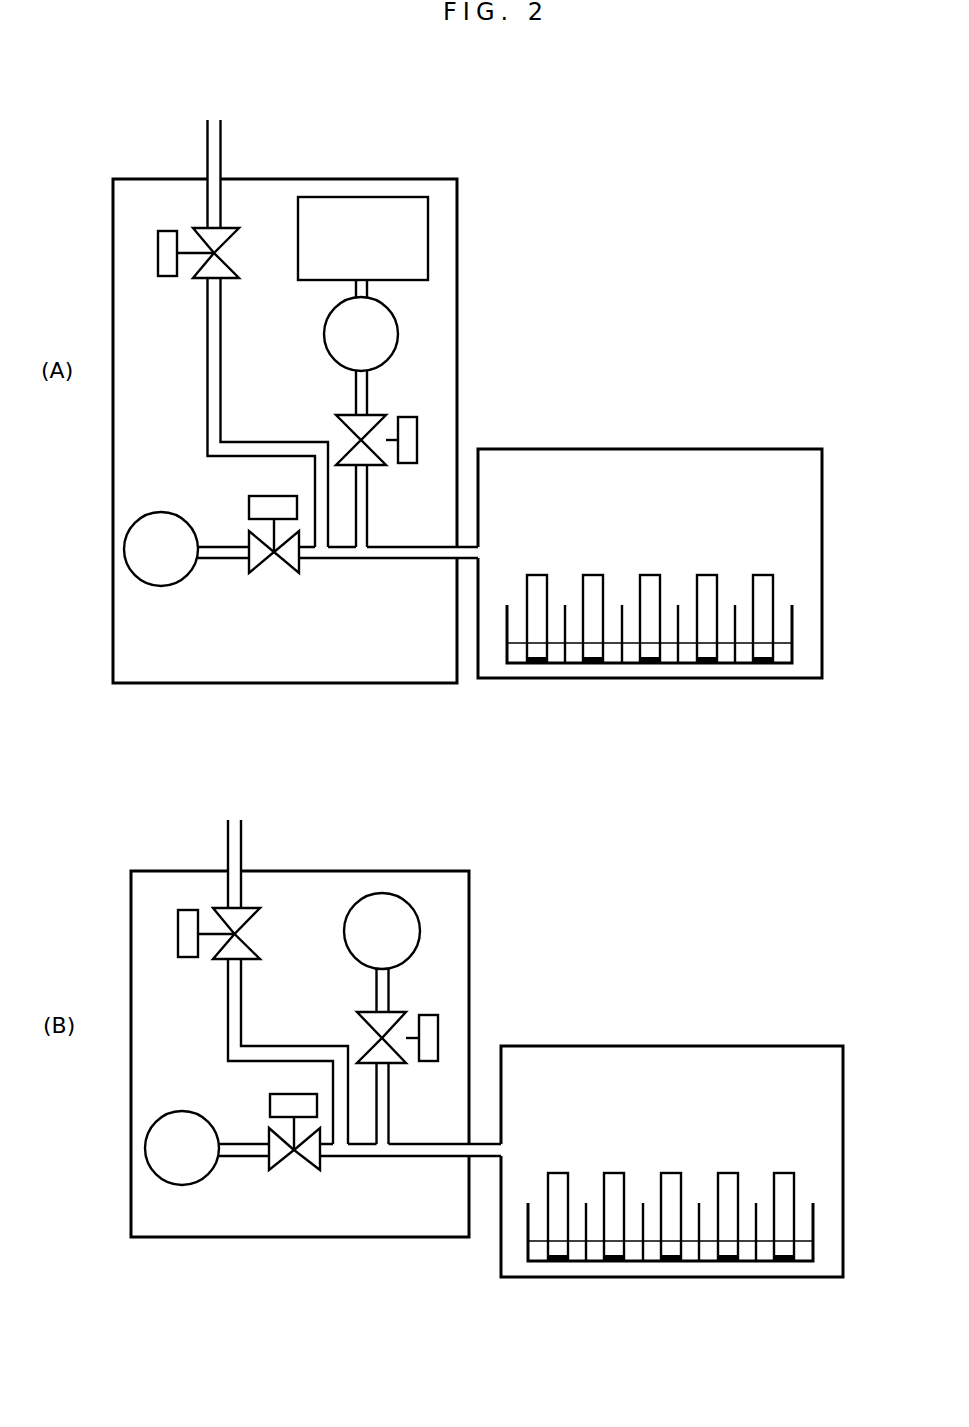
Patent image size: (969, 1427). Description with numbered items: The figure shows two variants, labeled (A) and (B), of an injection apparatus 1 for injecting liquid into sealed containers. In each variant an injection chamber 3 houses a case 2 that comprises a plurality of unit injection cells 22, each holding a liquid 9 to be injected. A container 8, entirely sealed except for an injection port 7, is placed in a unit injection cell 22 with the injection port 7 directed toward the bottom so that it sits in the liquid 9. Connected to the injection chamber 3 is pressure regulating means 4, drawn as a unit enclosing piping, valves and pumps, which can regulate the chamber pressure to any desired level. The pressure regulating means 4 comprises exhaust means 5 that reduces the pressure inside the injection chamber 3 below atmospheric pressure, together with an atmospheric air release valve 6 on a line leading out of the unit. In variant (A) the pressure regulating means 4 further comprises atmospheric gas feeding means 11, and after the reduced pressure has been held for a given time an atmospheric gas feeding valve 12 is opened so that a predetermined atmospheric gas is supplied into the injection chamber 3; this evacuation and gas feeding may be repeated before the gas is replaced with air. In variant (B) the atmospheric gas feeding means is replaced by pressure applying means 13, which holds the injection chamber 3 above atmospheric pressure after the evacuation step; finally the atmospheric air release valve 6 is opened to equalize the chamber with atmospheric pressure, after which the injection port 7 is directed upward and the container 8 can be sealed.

The injection apparatus 1 is at (675, 375).
The case 2 is at (727, 668).
The injection chamber 3 is at (725, 443).
The pressure regulating means 4 is at (310, 683).
The exhaust means 5 is at (172, 575).
The atmospheric air release valve 6 is at (186, 218).
The injection port 7 is at (767, 665).
The container 8 is at (768, 600).
The liquid 9 is at (555, 655).
The atmospheric gas feeding means 11 is at (439, 205).
The atmospheric gas feeding valve 12 is at (427, 438).
The pressure applying means 13 is at (430, 939).
The unit injection cell 22 is at (557, 620).